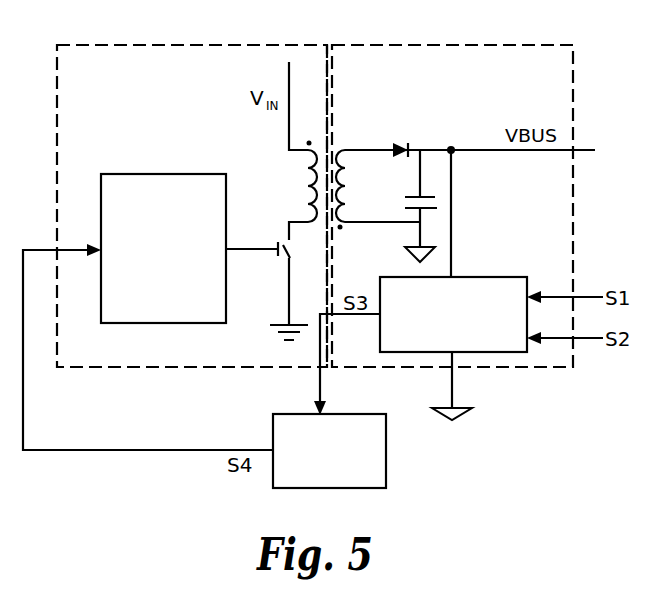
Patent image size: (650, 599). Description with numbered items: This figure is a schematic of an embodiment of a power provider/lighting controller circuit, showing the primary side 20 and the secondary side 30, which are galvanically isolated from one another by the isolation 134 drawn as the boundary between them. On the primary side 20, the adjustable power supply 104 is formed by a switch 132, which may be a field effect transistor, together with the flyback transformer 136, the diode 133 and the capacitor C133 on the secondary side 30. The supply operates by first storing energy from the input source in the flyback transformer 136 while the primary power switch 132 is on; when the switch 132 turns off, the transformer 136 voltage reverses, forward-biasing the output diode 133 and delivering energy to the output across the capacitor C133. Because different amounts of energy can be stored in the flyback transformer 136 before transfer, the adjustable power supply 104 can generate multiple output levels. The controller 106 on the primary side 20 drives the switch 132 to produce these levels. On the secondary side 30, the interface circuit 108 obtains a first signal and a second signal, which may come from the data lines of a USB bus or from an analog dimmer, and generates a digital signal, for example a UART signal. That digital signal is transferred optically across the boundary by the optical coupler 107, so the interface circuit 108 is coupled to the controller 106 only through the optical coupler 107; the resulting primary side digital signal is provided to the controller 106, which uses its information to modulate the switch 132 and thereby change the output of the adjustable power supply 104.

The primary side 20 is at (129, 105).
The secondary side 30 is at (451, 105).
The adjustable power supply 104 is at (290, 162).
The controller 106 is at (143, 325).
The optical coupler 107 is at (272, 415).
The interface circuit 108 is at (495, 277).
The switch 132 is at (275, 263).
The diode 133 is at (408, 145).
The isolation 134 is at (333, 275).
The flyback transformer 136 is at (339, 133).
The capacitor C133 is at (406, 198).